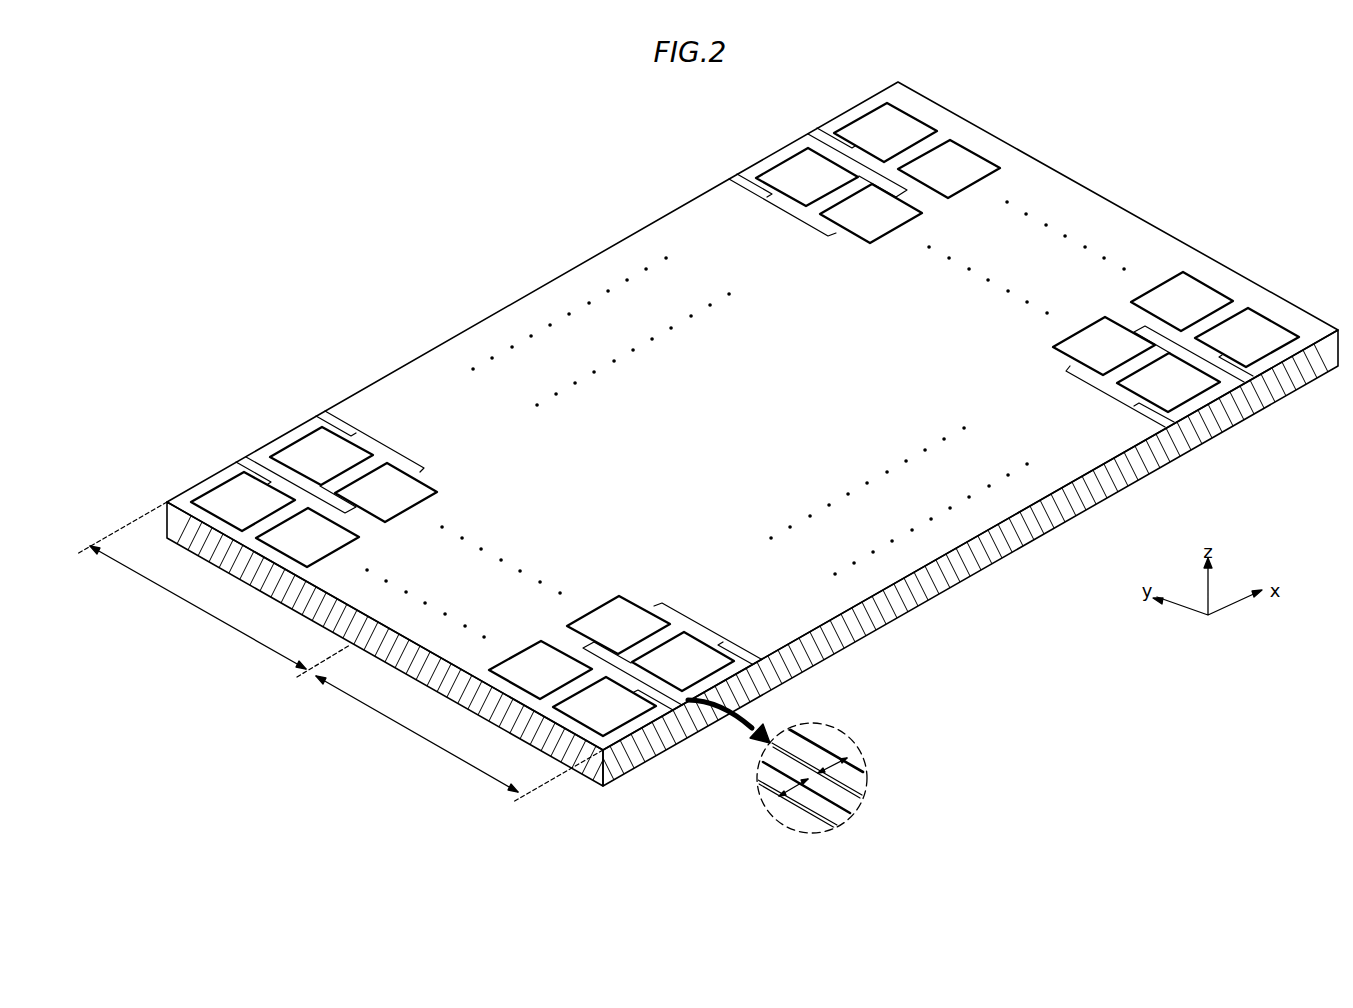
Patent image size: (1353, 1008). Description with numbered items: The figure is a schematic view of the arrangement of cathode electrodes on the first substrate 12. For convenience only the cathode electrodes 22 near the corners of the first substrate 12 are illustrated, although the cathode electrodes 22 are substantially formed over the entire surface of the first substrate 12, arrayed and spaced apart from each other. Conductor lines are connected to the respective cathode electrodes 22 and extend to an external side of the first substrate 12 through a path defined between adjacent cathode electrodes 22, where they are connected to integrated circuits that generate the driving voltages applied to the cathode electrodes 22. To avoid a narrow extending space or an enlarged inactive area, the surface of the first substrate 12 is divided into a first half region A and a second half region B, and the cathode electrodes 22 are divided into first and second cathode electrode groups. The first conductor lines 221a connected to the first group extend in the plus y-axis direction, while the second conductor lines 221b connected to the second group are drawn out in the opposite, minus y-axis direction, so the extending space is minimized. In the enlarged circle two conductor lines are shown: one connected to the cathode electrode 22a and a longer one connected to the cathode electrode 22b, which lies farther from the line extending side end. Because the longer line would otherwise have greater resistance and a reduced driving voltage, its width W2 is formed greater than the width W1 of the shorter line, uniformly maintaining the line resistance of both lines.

The first substrate 12 is at (967, 569).
The cathode electrodes 22 is at (745, 471).
The cathode electrode 22a is at (628, 712).
The cathode electrode 22b is at (562, 672).
The first conductor lines 221a is at (340, 418).
The second conductor lines 221b is at (740, 650).
The width of the conductor line 2211 W1 is at (793, 790).
The width of the conductor line 2213 W2 is at (850, 757).
The first half region A is at (198, 607).
The second half region B is at (417, 734).